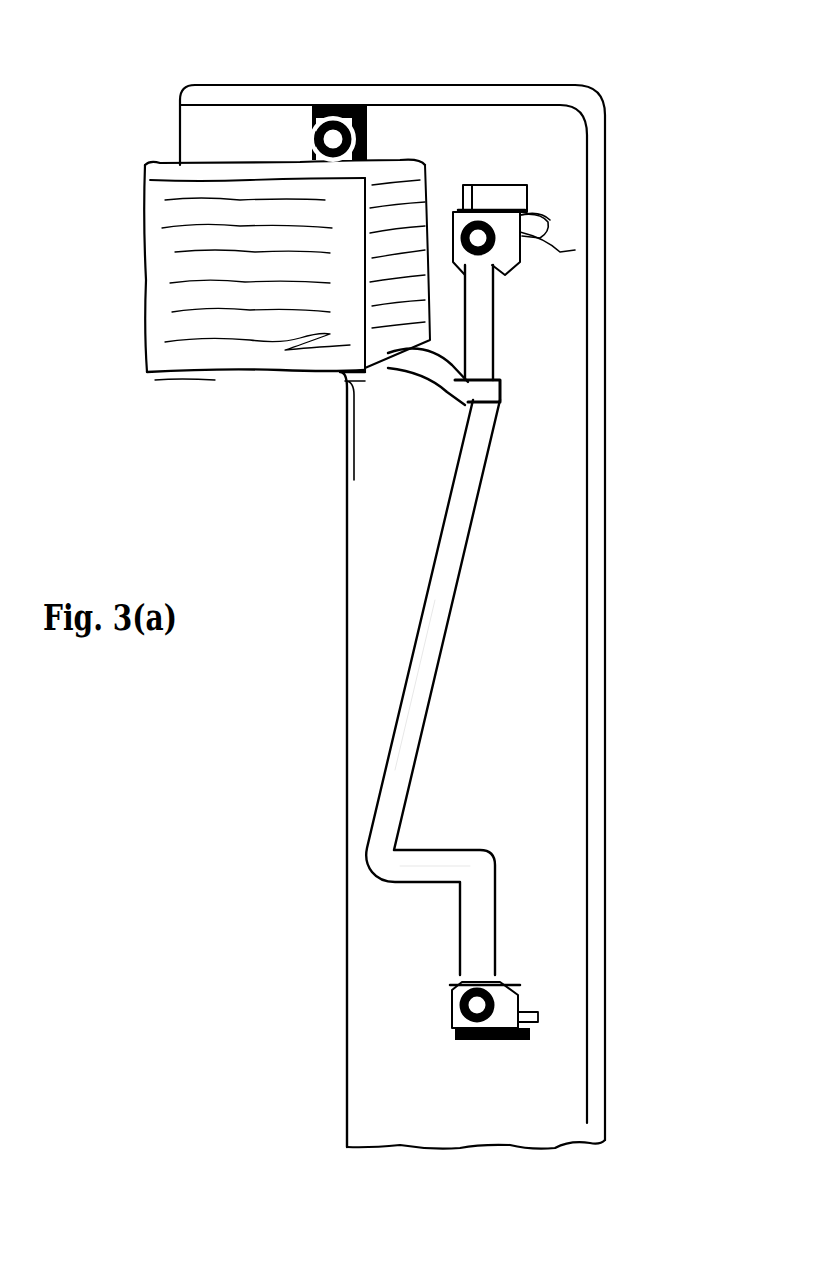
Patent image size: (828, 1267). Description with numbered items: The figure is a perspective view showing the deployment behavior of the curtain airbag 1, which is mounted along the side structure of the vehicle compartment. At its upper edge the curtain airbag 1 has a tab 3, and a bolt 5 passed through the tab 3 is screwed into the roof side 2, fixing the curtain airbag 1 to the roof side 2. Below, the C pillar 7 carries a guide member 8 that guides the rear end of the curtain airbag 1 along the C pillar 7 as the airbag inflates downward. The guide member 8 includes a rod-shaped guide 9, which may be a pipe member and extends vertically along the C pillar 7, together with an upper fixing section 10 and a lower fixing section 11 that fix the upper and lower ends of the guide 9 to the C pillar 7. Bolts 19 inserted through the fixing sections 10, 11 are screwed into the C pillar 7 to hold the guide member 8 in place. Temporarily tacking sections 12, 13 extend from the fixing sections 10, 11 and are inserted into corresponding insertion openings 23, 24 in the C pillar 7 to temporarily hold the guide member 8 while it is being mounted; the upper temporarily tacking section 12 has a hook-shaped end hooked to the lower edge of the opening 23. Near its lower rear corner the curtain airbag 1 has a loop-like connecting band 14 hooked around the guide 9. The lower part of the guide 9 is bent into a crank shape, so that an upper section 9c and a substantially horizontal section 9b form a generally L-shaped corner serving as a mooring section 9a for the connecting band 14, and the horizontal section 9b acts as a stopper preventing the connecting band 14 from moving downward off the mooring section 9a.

The curtain airbag 1 is at (195, 375).
The roof side 2 is at (222, 125).
The tab 3 is at (312, 132).
The bolt 5 is at (338, 114).
The C pillar 7 is at (570, 662).
The guide member 8 is at (507, 453).
The guide 9 is at (463, 583).
The mooring section 9a is at (400, 850).
The horizontal section 9b is at (420, 880).
The upper section 9c is at (430, 678).
The upper fixing section 10 is at (520, 252).
The lower fixing section 11 is at (530, 990).
The upper temporarily tacking section 12 is at (548, 215).
The lower temporarily tacking section 13 is at (540, 1015).
The connecting band 14 is at (416, 365).
The bolts 19 is at (490, 212).
The temporarily-tacking-section insertion opening 23 is at (510, 185).
The temporarily-tacking-section insertion opening 24 is at (476, 1040).